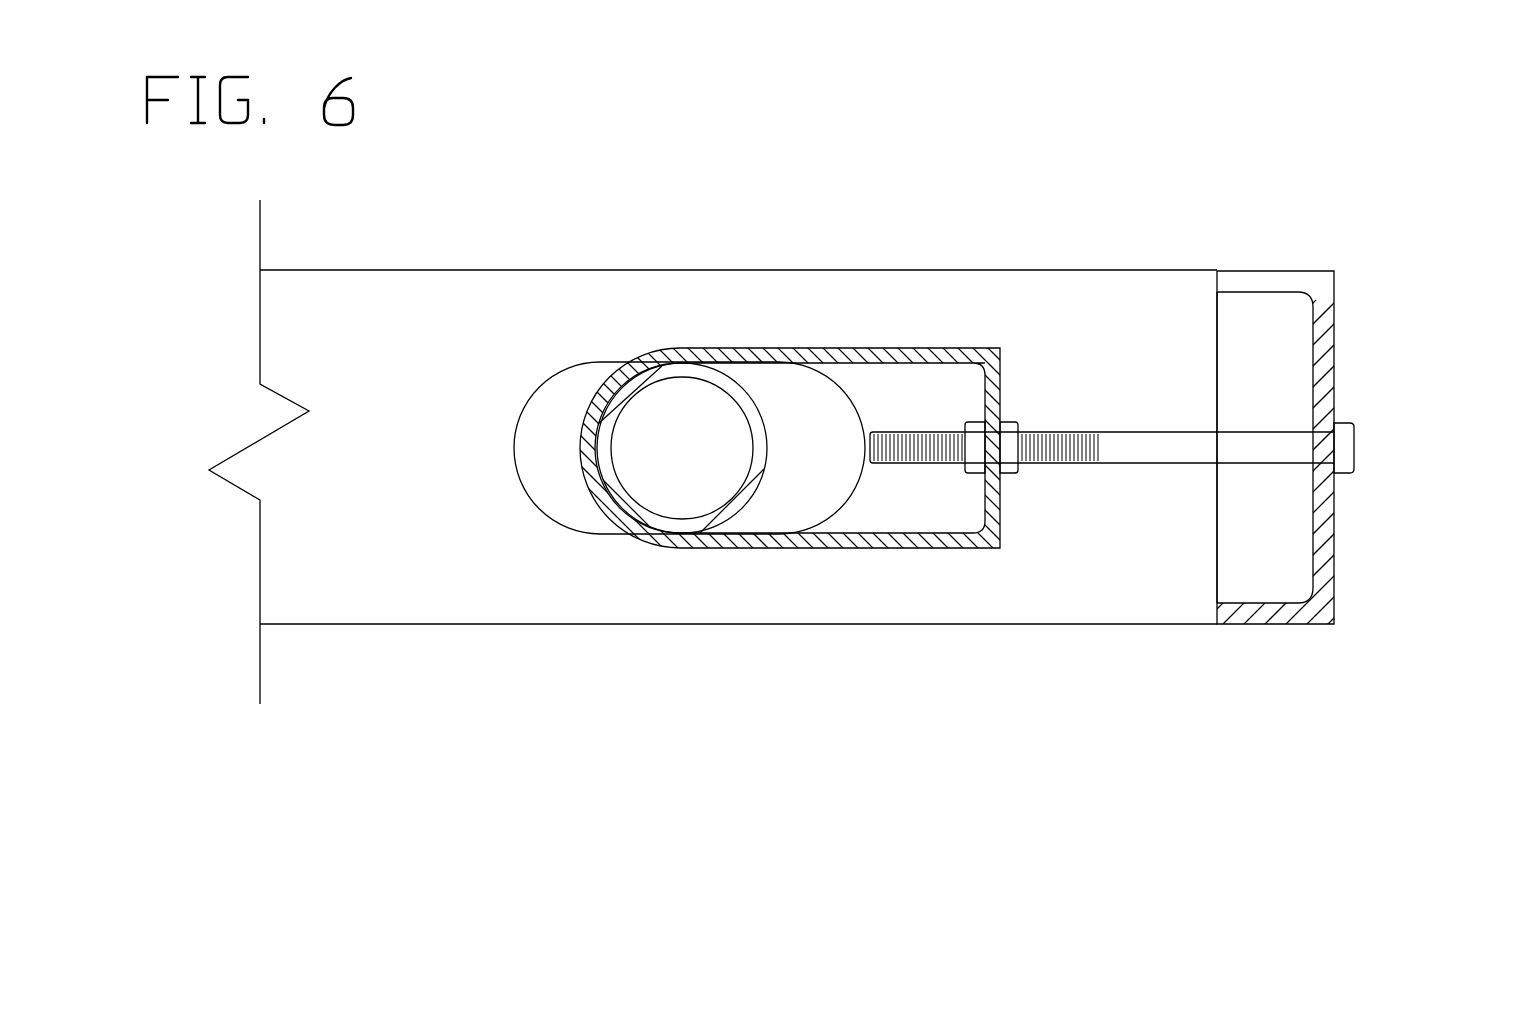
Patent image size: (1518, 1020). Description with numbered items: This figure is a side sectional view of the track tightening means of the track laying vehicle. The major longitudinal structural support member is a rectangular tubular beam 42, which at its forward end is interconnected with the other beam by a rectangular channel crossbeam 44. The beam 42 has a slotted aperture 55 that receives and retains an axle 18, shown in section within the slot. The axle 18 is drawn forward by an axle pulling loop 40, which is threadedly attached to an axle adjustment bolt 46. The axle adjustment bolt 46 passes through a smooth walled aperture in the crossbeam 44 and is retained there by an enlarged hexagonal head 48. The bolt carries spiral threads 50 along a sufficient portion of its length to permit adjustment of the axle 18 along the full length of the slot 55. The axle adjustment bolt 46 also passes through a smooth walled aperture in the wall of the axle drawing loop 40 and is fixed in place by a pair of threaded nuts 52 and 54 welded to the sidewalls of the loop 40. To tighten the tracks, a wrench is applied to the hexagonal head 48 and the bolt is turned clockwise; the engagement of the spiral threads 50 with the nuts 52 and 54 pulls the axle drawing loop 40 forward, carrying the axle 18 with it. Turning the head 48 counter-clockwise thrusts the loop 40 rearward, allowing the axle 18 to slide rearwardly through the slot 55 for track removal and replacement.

The axle 18 is at (678, 522).
The axle pulling loop 40 is at (837, 543).
The rectangular tubular beam 42 is at (1033, 562).
The rectangular channel crossbeam 44 is at (1300, 612).
The axle adjustment bolt 46 is at (1245, 447).
The enlarged hexagonal head 48 is at (1345, 445).
The spiral threads 50 is at (1048, 448).
The threaded nut 52 is at (1021, 430).
The threaded nut 54 is at (968, 420).
The slotted aperture 55 is at (797, 443).